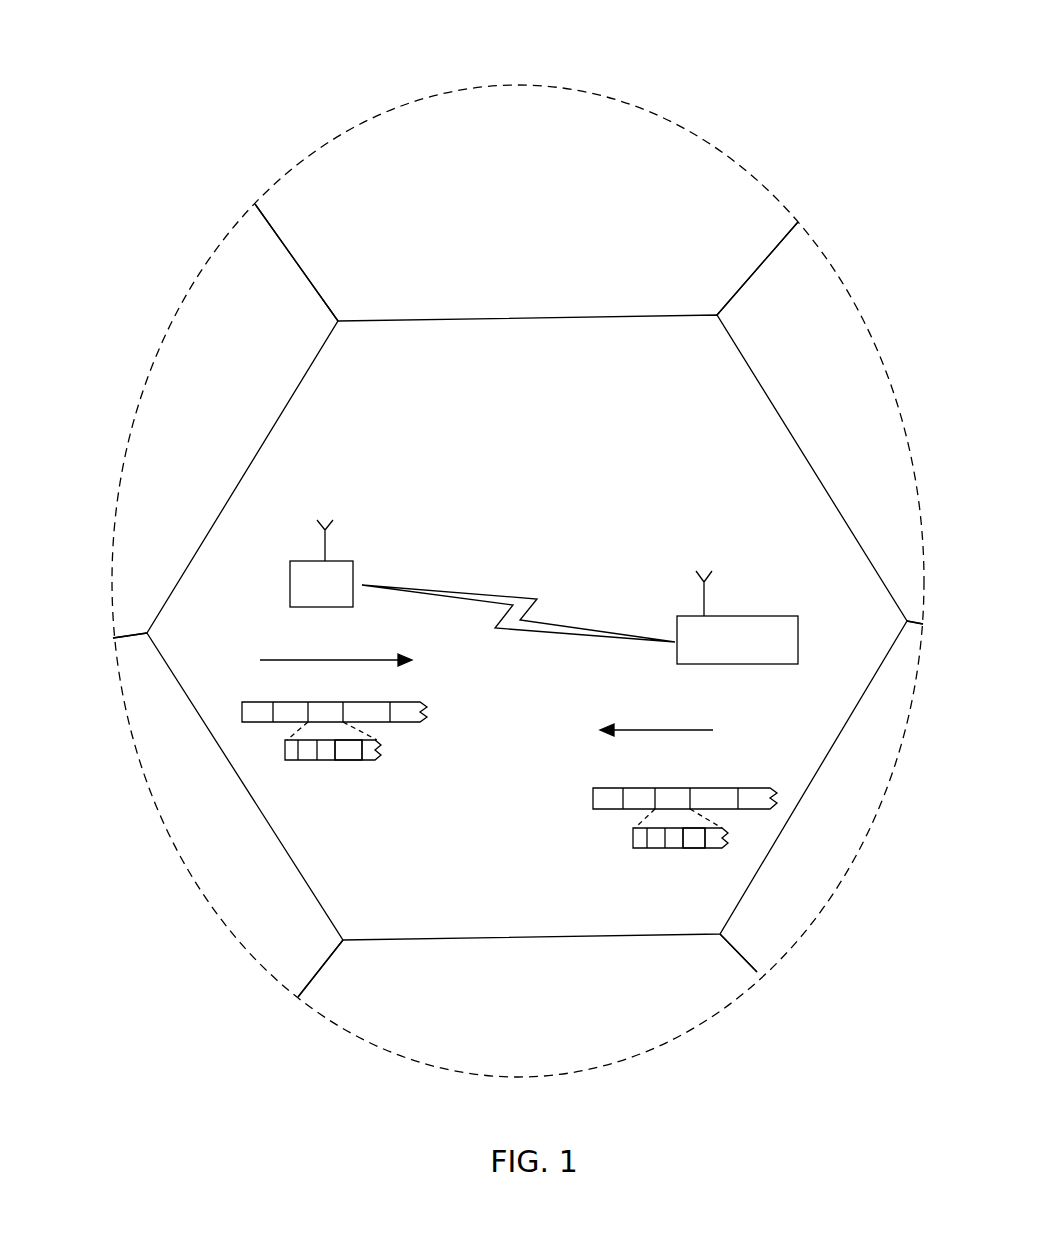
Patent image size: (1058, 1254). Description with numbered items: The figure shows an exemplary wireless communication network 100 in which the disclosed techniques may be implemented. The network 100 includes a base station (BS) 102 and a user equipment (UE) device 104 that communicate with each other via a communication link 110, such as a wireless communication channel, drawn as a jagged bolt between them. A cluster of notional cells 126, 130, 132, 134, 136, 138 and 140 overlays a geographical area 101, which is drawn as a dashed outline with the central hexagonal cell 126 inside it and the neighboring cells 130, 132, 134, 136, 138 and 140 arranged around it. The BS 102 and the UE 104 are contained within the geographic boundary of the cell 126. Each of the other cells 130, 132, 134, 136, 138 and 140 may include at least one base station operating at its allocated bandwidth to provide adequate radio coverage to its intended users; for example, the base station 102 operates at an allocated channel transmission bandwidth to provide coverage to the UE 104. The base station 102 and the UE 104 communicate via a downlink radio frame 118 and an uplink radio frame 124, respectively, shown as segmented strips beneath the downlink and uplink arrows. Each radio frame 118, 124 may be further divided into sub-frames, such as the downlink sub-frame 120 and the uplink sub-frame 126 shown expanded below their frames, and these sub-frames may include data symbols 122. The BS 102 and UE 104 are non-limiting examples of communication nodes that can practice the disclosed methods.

The wireless communication network 100 is at (454, 38).
The geographical area 101 is at (675, 112).
The base station 102 is at (290, 577).
The user equipment device 104 is at (765, 613).
The communication link 110 is at (513, 587).
The downlink radio frame 118 is at (242, 710).
The sub-frame 120 is at (285, 748).
The data symbol 122 is at (347, 747).
The uplink radio frame 124 is at (743, 783).
The cell 126 is at (380, 388).
The cell 130 is at (210, 278).
The cell 132 is at (355, 152).
The cell 134 is at (822, 303).
The cell 136 is at (792, 912).
The cell 138 is at (393, 1015).
The cell 140 is at (213, 878).